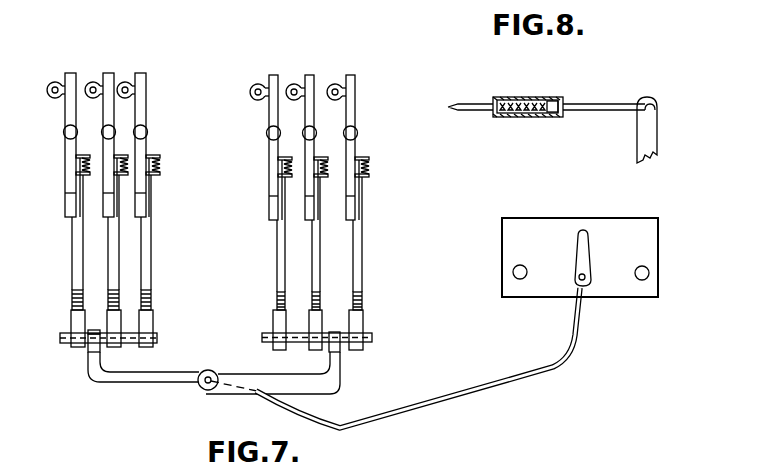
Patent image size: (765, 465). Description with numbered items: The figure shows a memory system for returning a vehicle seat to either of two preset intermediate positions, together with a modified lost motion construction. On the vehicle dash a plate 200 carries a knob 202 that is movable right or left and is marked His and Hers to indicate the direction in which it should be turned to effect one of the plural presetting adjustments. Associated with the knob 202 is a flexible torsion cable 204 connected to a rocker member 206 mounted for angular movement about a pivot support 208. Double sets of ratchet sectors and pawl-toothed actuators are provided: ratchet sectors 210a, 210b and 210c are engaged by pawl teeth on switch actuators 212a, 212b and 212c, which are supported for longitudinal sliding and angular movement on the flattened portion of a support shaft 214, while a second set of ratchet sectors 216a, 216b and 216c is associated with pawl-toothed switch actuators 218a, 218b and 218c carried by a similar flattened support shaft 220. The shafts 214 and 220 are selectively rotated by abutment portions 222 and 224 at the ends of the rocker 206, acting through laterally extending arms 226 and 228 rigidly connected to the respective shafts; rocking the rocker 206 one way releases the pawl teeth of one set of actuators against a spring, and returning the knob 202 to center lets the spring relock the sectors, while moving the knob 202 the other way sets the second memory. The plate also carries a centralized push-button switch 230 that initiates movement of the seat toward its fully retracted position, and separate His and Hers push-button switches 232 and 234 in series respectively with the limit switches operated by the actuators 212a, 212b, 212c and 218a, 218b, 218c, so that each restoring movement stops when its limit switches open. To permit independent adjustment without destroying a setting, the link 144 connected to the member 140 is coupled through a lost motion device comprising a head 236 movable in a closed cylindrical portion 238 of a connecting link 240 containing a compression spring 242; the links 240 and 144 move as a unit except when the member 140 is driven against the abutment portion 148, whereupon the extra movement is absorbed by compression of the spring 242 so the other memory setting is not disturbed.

In FIG. 7, the member 140 is at (351, 120).
In FIG. 8, the member 140 is at (652, 130).
In FIG. 7, the link 144 is at (263, 86).
In FIG. 8, the link 144 is at (618, 103).
In FIG. 7, the abutment portion 148 is at (66, 199).
In FIG. 7, the plate 200 is at (632, 221).
In FIG. 7, the knob 202 is at (579, 240).
In FIG. 7, the flexible torsion cable 204 is at (498, 386).
In FIG. 7, the rocker member 206 is at (165, 383).
In FIG. 7, the pivot support 208 is at (211, 371).
In FIG. 7, the ratchet sector 210a is at (76, 245).
In FIG. 7, the ratchet sector 210b is at (116, 245).
In FIG. 7, the ratchet sector 210c is at (148, 278).
In FIG. 7, the switch actuator 212a is at (72, 320).
In FIG. 7, the switch actuator 212b is at (113, 330).
In FIG. 7, the switch actuator 212c is at (147, 330).
In FIG. 7, the support shaft 214 is at (65, 343).
In FIG. 7, the ratchet sector 216a is at (277, 258).
In FIG. 7, the ratchet sector 216b is at (322, 250).
In FIG. 7, the ratchet sector 216c is at (384, 243).
In FIG. 7, the switch actuator 218a is at (279, 328).
In FIG. 7, the switch actuator 218b is at (315, 328).
In FIG. 7, the switch actuator 218c is at (360, 320).
In FIG. 7, the support shaft 220 is at (370, 341).
In FIG. 7, the abutment portion 222 is at (90, 358).
In FIG. 7, the abutment portion 224 is at (335, 366).
In FIG. 7, the laterally extending arm 226 is at (97, 330).
In FIG. 7, the laterally extending arm 228 is at (335, 332).
In FIG. 7, the centralized switch 230 is at (587, 285).
In FIG. 7, the switch 232 is at (513, 272).
In FIG. 7, the switch 234 is at (649, 273).
In FIG. 8, the head 236 is at (551, 117).
In FIG. 8, the closed cylindrical portion 238 is at (524, 116).
In FIG. 8, the connecting link 240 is at (460, 103).
In FIG. 8, the compression spring 242 is at (531, 98).